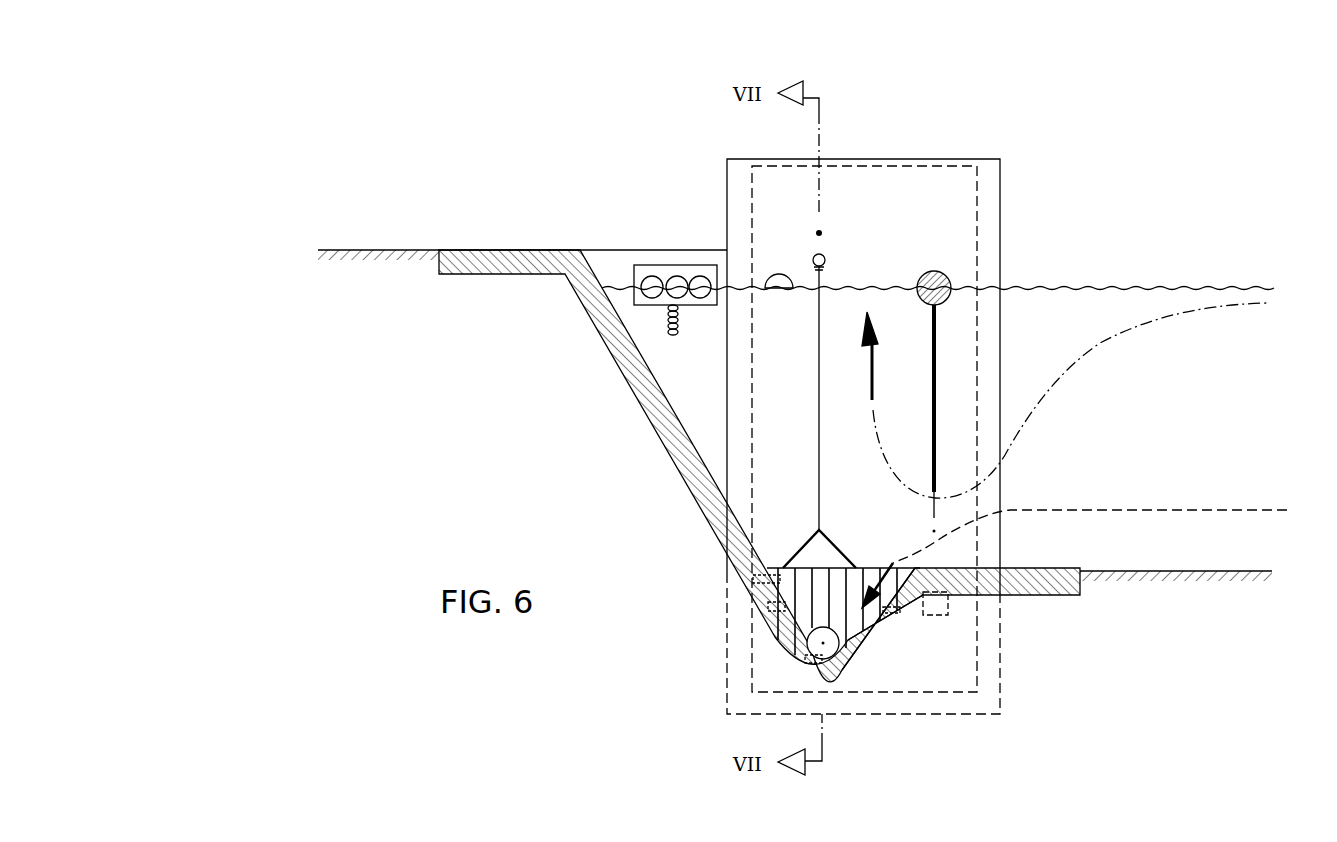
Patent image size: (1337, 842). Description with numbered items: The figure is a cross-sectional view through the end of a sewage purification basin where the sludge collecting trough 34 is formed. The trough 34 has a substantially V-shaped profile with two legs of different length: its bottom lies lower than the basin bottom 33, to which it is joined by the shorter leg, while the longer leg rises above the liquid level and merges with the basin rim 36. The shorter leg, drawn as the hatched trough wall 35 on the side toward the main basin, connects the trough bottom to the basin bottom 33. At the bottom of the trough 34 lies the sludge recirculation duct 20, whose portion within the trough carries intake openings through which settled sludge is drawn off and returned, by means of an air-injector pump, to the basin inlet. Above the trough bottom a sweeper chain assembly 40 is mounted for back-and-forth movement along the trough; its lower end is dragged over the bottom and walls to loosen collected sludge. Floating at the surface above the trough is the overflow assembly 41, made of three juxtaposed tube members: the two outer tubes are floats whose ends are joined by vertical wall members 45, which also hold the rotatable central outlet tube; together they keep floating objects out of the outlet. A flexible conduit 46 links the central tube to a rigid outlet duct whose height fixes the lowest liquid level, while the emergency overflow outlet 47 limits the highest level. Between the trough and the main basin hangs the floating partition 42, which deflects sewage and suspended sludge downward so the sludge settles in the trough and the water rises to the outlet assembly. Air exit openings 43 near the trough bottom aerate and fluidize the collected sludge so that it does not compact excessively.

The sludge recirculation duct 20 is at (821, 642).
The bottom 33 is at (1222, 572).
The sludge collecting trough 34 is at (665, 165).
The trough wall 35 is at (878, 648).
The basin rim 36 is at (480, 265).
The sweeper chain assembly 40 is at (818, 345).
The floating overflow assembly 41 is at (652, 278).
The floating partition 42 is at (948, 278).
The air exit openings 43 is at (768, 605).
The vertical wall members 45 is at (681, 280).
The flexible conduit 46 is at (678, 331).
The emergency overflow outlet 47 is at (776, 274).